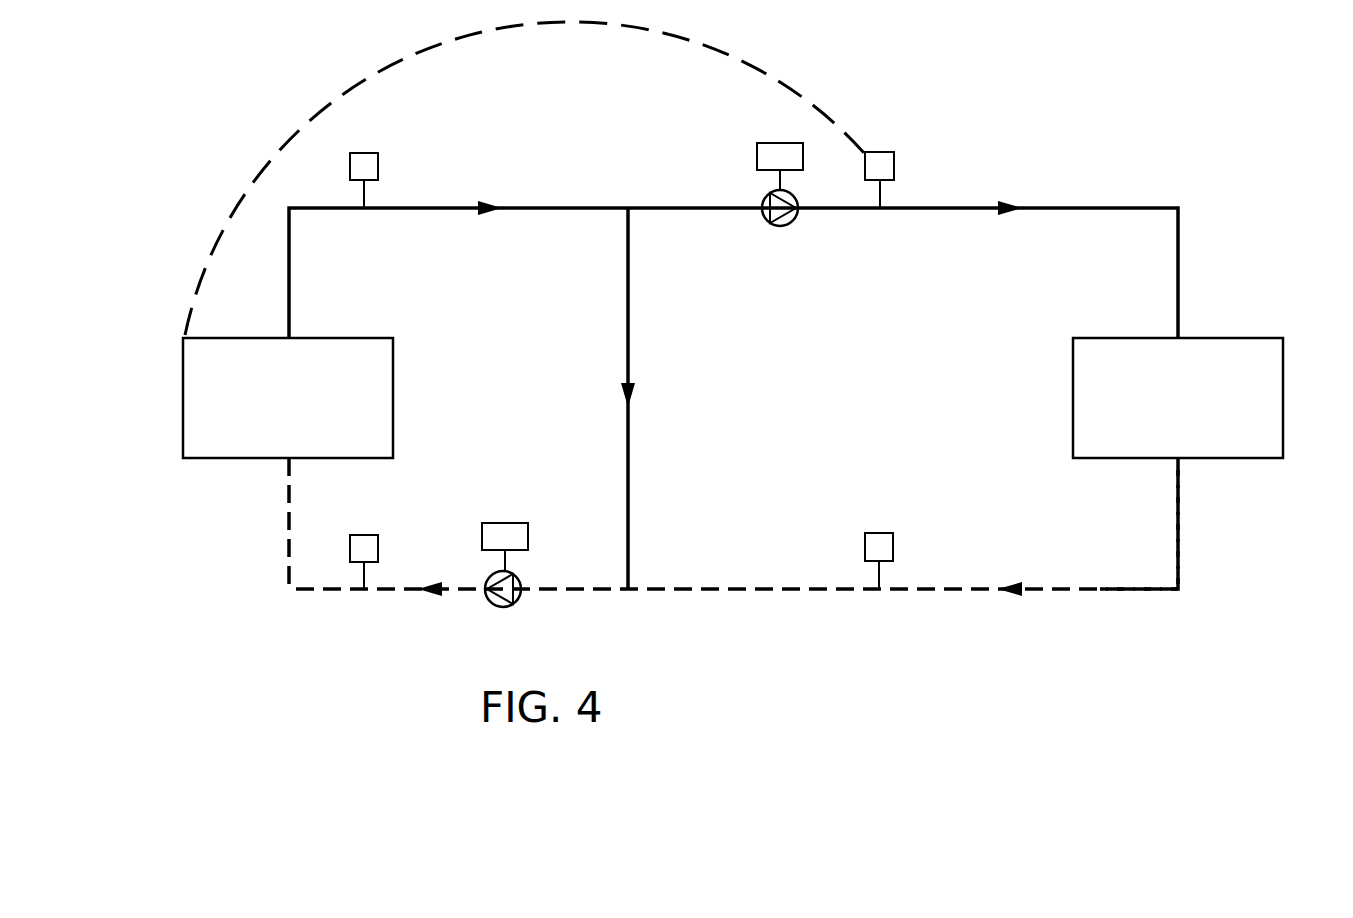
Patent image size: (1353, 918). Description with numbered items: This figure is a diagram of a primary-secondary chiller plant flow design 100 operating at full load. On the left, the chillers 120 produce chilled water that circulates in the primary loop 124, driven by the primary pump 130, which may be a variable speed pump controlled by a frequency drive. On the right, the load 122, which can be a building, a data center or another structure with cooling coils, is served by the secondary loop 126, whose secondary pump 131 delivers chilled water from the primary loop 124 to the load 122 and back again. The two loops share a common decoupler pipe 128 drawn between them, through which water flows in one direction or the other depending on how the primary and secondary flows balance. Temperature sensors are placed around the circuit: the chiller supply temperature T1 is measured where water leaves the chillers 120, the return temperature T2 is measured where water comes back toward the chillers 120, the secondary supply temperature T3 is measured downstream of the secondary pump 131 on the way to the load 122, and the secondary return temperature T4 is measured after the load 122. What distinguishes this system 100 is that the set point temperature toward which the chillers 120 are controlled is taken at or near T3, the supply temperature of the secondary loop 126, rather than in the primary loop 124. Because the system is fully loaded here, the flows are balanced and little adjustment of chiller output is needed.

The primary-secondary chiller plant flow design 100 is at (677, 118).
The chillers 120 is at (183, 430).
The load 122 is at (1262, 459).
The primary loop 124 is at (298, 592).
The secondary loop 126 is at (1184, 546).
The decoupler pipe 128 is at (628, 337).
The primary pump 130 is at (525, 590).
The secondary pump 131 is at (790, 222).
The chiller supply temperature T1 is at (350, 165).
The primary loop return temperature T2 is at (350, 550).
The secondary loop supply temperature T3 is at (895, 165).
The secondary loop return temperature T4 is at (868, 561).